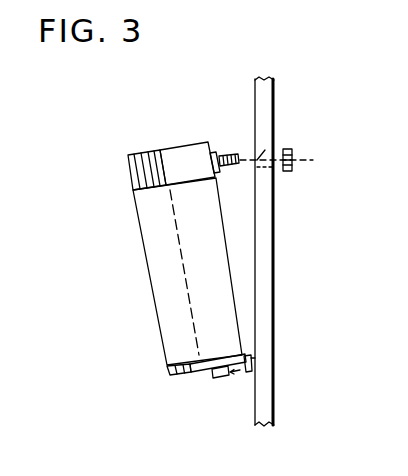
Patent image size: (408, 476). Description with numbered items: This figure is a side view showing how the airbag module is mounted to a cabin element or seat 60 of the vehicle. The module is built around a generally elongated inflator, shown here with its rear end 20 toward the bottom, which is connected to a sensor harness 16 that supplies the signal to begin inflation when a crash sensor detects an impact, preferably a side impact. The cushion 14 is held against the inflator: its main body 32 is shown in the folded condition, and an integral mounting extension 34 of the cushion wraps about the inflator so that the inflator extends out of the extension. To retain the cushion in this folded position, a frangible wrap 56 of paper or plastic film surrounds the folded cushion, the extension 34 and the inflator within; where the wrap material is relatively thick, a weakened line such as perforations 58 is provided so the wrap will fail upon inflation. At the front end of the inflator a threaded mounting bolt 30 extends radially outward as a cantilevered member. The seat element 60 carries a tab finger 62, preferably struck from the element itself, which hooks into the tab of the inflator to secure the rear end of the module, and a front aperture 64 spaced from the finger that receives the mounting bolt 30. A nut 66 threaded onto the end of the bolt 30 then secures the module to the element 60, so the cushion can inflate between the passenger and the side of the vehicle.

The cushion 14 is at (185, 260).
The sensor harness 16 is at (215, 381).
The rear end 20 is at (197, 373).
The mounting bolt 30 is at (225, 156).
The main body 32 is at (128, 153).
The mounting extension 34 is at (190, 147).
The frangible wrap 56 is at (158, 221).
The perforations 58 is at (181, 253).
The cabin element or seat 60 is at (275, 101).
The tab finger 62 is at (248, 373).
The front aperture 64 is at (268, 143).
The nut 66 is at (288, 172).